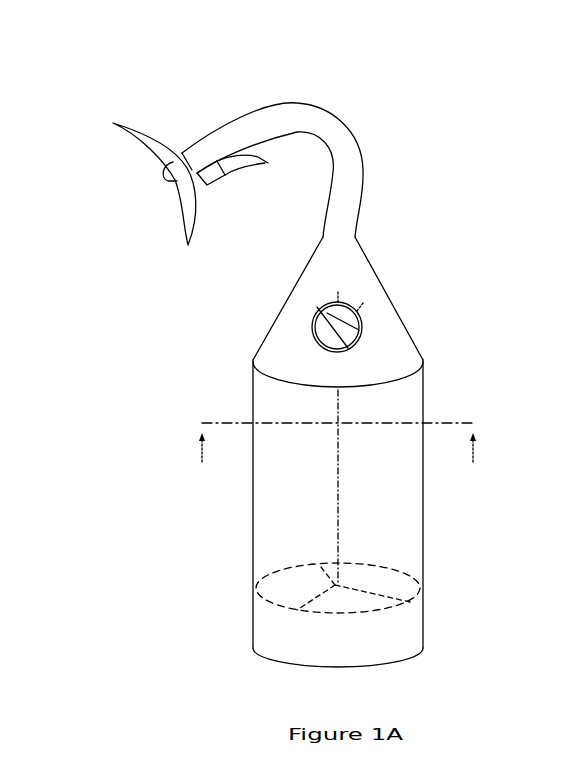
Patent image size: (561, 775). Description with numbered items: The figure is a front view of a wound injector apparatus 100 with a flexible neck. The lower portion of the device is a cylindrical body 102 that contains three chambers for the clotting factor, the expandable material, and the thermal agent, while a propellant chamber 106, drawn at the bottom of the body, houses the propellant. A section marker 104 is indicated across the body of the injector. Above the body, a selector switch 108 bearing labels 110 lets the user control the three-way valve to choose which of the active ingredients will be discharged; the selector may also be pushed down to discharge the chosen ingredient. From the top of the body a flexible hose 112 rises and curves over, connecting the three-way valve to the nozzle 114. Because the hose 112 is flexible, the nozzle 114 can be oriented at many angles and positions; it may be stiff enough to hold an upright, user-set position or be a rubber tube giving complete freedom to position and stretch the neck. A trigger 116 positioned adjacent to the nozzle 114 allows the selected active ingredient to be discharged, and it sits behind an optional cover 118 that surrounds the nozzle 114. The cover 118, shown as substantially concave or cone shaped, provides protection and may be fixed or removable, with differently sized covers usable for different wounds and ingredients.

The wound injector apparatus 100 is at (84, 52).
The cylindrical body 102 is at (286, 510).
The section line 104 is at (537, 742).
The propellant chamber 106 is at (277, 630).
The selector switch 108 is at (311, 326).
The labels 110 is at (375, 317).
The flexible hose 112 is at (355, 137).
The nozzle 114 is at (160, 179).
The trigger 116 is at (270, 161).
The cover 118 is at (130, 116).